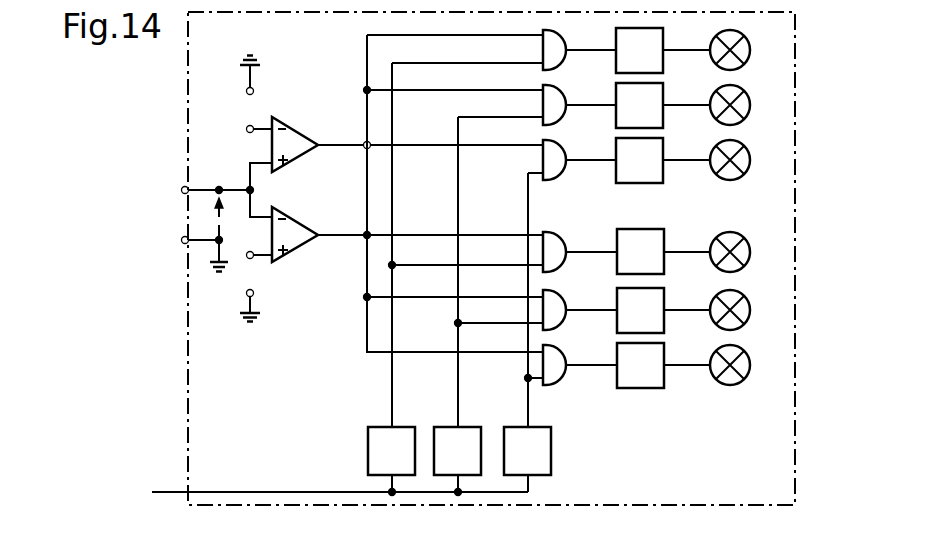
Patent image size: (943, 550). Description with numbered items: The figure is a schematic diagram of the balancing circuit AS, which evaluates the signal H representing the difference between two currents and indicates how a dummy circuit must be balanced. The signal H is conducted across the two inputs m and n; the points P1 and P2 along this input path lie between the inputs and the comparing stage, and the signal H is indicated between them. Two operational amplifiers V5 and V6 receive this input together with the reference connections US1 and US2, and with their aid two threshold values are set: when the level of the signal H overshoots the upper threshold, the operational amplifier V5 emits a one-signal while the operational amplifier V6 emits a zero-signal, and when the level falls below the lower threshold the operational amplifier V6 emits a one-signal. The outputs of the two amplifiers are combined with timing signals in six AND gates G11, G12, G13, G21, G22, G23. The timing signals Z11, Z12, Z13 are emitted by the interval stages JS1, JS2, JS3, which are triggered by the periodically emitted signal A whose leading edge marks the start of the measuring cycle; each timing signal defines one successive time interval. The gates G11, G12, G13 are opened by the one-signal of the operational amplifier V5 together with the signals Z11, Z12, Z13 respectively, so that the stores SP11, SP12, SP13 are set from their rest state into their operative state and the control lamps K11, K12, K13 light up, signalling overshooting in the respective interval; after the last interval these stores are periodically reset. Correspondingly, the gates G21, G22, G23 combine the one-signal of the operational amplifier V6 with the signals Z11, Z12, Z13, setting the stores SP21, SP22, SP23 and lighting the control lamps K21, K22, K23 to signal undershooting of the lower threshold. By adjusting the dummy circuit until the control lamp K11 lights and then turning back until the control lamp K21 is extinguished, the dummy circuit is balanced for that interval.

The balancing circuit AS is at (188, 113).
The input n is at (208, 189).
The input m is at (188, 239).
The potential point P1 is at (228, 246).
The potential point P2 is at (218, 176).
The signal H is at (212, 219).
The reference voltage source US1 is at (242, 94).
The reference voltage source US2 is at (264, 287).
The operational amplifier V5 is at (295, 139).
The operational amplifier V6 is at (295, 229).
The AND gate G11 is at (579, 41).
The AND gate G12 is at (579, 96).
The AND gate G13 is at (579, 154).
The AND gate G21 is at (579, 244).
The AND gate G22 is at (579, 303).
The AND gate G23 is at (579, 359).
The store SP11 is at (663, 50).
The store SP12 is at (663, 105).
The store SP13 is at (663, 160).
The store SP21 is at (663, 251).
The store SP22 is at (663, 310).
The store SP23 is at (663, 365).
The control lamp K11 is at (746, 50).
The control lamp K12 is at (746, 105).
The control lamp K13 is at (746, 160).
The control lamp K21 is at (746, 252).
The control lamp K22 is at (746, 310).
The control lamp K23 is at (746, 365).
The signal Z11 is at (377, 407).
The signal Z12 is at (442, 407).
The signal Z13 is at (512, 407).
The interval stage JS1 is at (391, 459).
The interval stage JS2 is at (457, 459).
The interval stage JS3 is at (527, 459).
The signal A is at (340, 479).